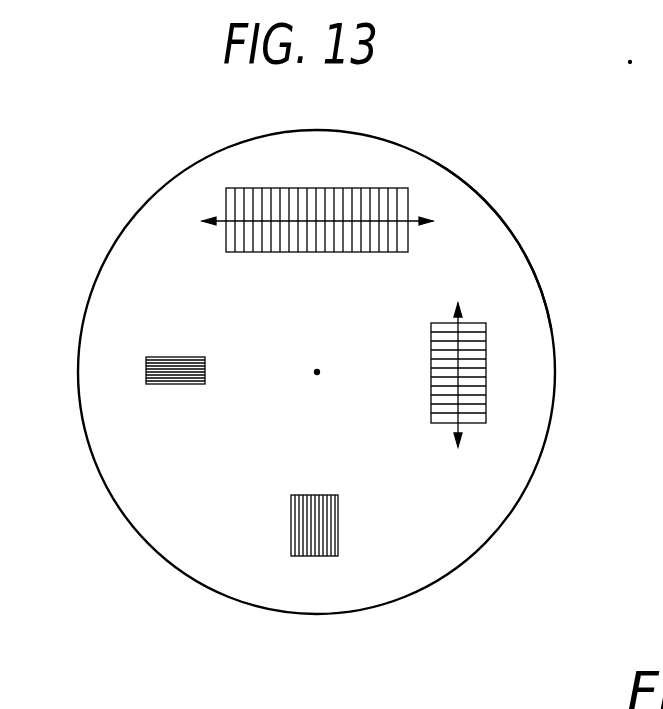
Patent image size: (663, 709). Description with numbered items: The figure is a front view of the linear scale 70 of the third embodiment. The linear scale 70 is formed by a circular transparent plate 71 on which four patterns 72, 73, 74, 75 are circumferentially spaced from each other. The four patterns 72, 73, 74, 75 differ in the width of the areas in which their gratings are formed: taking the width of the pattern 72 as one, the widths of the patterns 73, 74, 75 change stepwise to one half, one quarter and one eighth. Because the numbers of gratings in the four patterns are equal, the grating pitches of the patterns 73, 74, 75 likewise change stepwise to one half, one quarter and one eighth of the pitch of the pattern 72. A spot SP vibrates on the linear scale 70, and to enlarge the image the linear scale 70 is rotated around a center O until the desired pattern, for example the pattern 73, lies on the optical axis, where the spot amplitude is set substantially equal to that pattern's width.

The linear scale 70 is at (525, 195).
The circular transparent plate 71 is at (535, 275).
The pattern 72 is at (380, 188).
The pattern 73 is at (486, 404).
The pattern 74 is at (318, 556).
The pattern 75 is at (146, 378).
The scan path SP is at (212, 210).
The center O is at (314, 375).